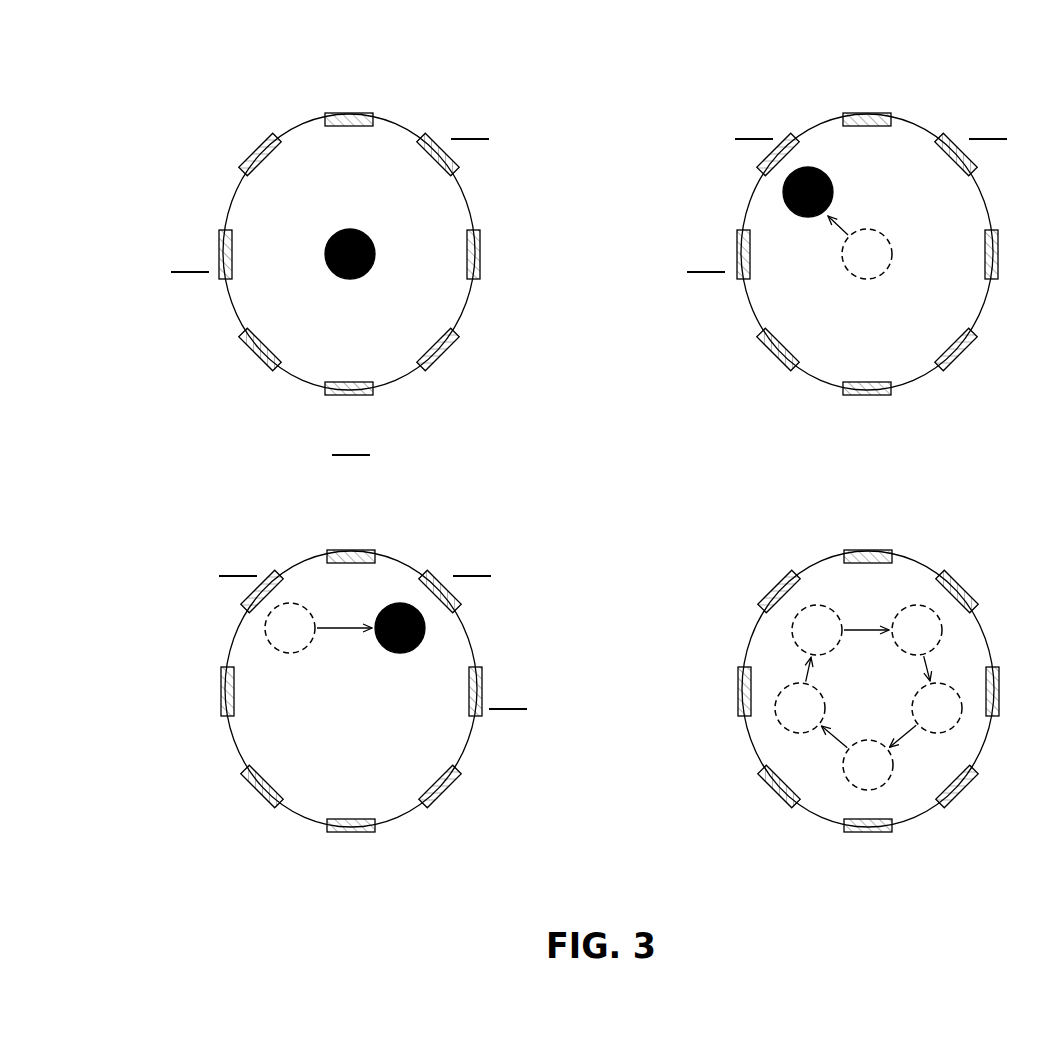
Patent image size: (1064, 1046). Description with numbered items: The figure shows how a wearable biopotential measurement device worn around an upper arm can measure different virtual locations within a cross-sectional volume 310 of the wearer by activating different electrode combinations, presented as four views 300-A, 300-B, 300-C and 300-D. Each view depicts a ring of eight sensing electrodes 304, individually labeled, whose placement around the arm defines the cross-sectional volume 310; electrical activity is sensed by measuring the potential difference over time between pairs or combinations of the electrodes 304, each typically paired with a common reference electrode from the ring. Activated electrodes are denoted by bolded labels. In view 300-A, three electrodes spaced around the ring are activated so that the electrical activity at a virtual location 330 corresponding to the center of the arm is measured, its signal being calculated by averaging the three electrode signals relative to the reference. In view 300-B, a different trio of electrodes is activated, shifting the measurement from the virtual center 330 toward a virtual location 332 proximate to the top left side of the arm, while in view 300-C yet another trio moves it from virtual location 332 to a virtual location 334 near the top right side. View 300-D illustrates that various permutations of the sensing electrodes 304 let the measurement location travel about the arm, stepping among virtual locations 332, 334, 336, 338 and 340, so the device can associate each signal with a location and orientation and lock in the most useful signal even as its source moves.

The view 300-A is at (98, 56).
The view 300-B is at (622, 56).
The view 300-C is at (98, 522).
The view 300-D is at (622, 522).
The sensing electrodes 304 is at (230, 163).
The cross-sectional volume 310 is at (211, 204).
The virtual location 330 is at (342, 279).
The virtual location 332 is at (800, 217).
The virtual location 334 is at (396, 653).
The virtual location 336 is at (937, 708).
The virtual location 338 is at (868, 765).
The virtual location 340 is at (800, 708).